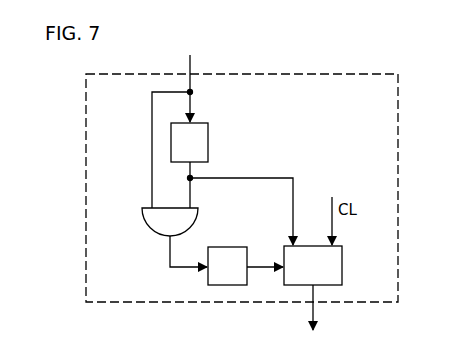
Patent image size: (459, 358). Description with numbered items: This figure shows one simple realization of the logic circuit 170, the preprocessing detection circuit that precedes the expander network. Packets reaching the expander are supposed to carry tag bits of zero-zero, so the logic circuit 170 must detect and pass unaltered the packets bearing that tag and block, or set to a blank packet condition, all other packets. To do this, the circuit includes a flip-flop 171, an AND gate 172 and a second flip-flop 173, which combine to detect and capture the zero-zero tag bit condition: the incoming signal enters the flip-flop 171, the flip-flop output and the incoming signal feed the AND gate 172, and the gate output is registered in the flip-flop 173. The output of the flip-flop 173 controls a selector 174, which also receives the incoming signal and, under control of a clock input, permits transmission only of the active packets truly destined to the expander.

The logic circuit 170 is at (347, 74).
The flip-flop 171 is at (210, 143).
The AND gate 172 is at (153, 217).
The flip-flop 173 is at (233, 247).
The selector 174 is at (343, 267).